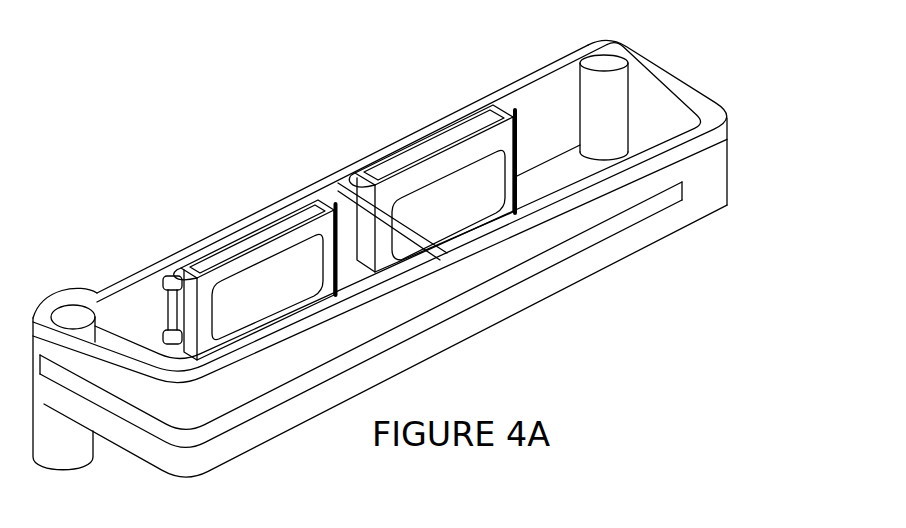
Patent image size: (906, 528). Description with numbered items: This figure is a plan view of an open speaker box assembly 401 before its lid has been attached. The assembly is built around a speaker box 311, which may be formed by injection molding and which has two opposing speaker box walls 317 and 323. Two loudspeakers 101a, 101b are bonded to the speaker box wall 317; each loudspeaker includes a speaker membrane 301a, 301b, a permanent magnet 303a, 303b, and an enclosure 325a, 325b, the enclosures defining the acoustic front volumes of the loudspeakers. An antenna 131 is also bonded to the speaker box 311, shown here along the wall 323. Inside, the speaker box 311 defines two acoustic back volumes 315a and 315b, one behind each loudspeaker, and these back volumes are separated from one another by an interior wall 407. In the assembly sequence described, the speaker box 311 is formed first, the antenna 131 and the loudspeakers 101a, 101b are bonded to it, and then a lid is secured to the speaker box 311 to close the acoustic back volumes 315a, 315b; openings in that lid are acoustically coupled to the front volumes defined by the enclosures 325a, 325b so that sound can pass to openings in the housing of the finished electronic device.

The speaker box assembly 401 is at (747, 129).
The speaker box 311 is at (667, 65).
The speaker box wall 323 is at (693, 185).
The antenna 131 is at (630, 218).
The speaker box wall 317 is at (137, 275).
The acoustic back volume 315a is at (167, 368).
The acoustic back volume 315b is at (552, 180).
The loudspeaker 101a is at (277, 199).
The loudspeaker 101b is at (368, 143).
The permanent magnet 303a is at (236, 243).
The permanent magnet 303b is at (433, 147).
The speaker membrane 301a is at (335, 200).
The speaker membrane 301b is at (493, 103).
The interior wall 407 is at (417, 233).
The enclosure 325a is at (177, 317).
The enclosure 325b is at (512, 151).